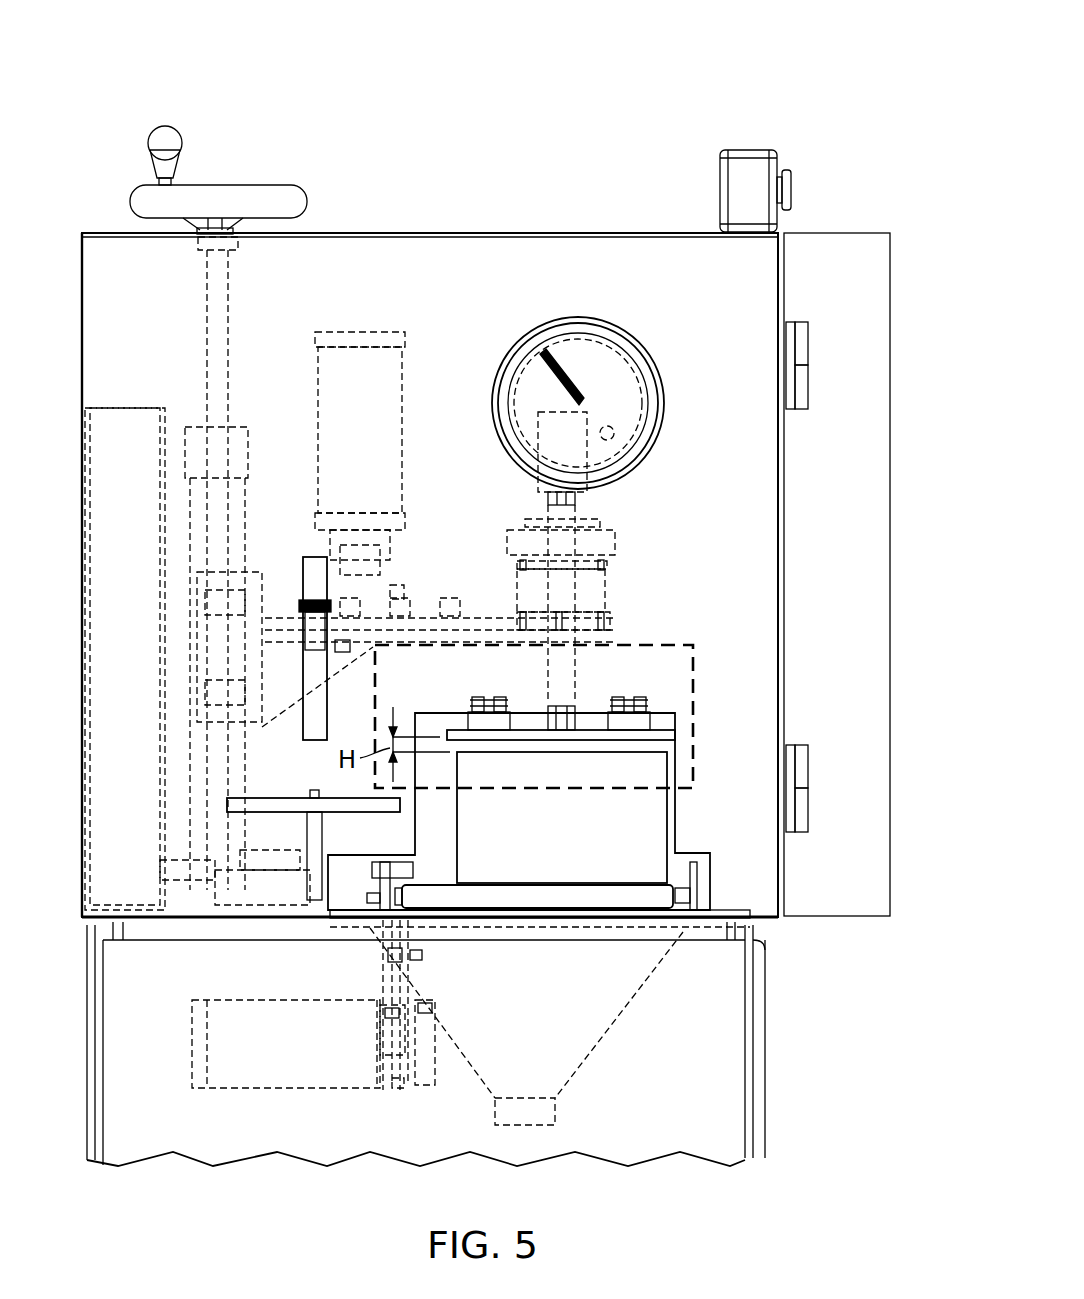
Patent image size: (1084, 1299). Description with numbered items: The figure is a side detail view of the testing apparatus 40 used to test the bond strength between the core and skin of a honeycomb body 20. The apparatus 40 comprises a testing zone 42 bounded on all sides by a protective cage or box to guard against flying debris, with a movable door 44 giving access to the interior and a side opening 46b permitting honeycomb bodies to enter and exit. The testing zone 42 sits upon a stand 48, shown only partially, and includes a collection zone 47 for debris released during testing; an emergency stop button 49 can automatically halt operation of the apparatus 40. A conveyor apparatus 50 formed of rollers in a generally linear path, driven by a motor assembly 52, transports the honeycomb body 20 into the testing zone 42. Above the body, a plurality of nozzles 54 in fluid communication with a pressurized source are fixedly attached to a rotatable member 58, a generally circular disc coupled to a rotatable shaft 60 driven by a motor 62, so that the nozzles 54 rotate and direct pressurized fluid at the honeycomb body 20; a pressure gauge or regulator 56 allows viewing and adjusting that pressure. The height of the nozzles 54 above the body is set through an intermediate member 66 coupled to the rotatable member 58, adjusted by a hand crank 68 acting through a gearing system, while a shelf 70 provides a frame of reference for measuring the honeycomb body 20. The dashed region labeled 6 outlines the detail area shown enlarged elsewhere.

The testing apparatus 40 is at (660, 88).
The testing zone 42 is at (504, 222).
The door 44 is at (882, 296).
The side opening 46b is at (692, 812).
The collection zone 47 is at (605, 1030).
The stand 48 is at (768, 1022).
The emergency stop button 49 is at (793, 186).
The conveyor apparatus 50 is at (600, 897).
The motor assembly 52 is at (310, 1098).
The nozzles 54 is at (468, 708).
The pressure gauge and/or pressure regulator 56 is at (562, 355).
The rotatable member 58 is at (676, 736).
The rotatable shaft 60 is at (552, 680).
The motor 62 is at (388, 440).
The intermediate member 66 is at (456, 612).
The hand crank 68 is at (297, 190).
The shelf 70 is at (244, 805).
The honeycomb body 20 is at (440, 838).
The detail region 6 is at (650, 645).